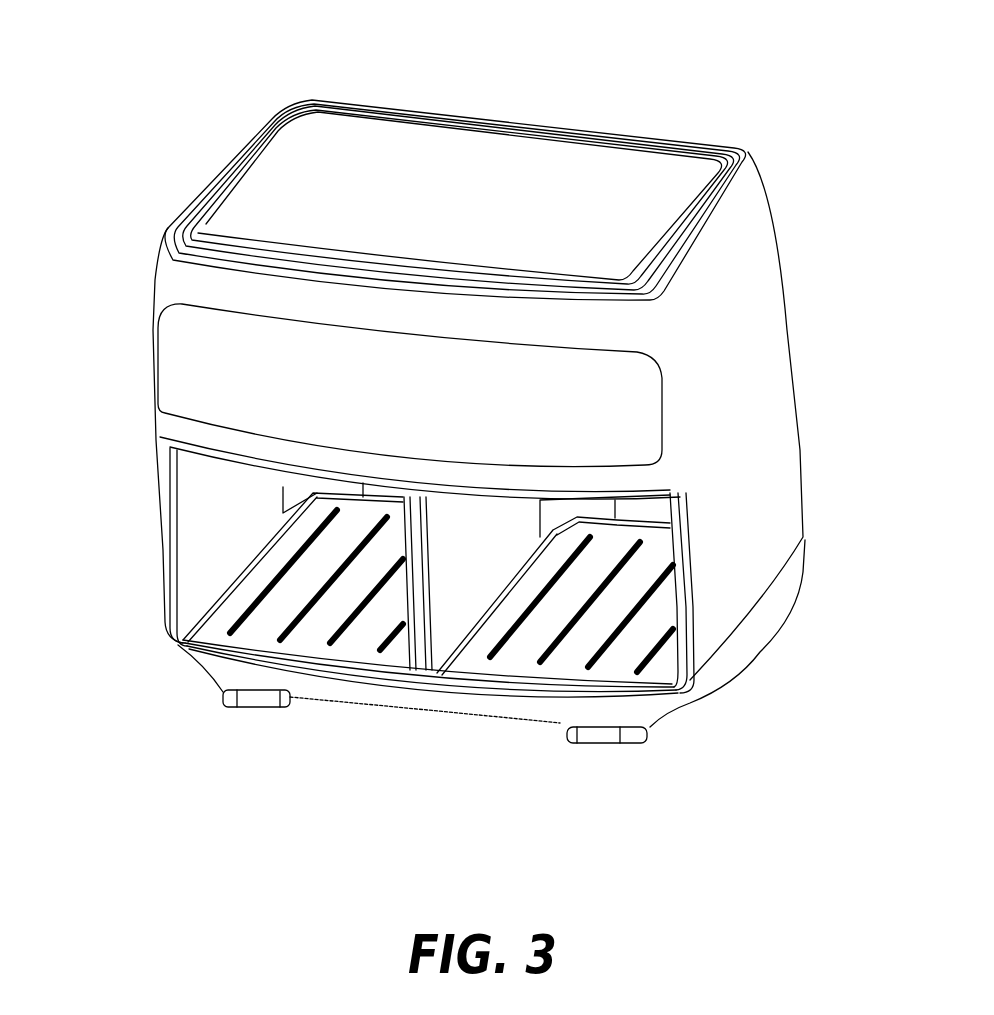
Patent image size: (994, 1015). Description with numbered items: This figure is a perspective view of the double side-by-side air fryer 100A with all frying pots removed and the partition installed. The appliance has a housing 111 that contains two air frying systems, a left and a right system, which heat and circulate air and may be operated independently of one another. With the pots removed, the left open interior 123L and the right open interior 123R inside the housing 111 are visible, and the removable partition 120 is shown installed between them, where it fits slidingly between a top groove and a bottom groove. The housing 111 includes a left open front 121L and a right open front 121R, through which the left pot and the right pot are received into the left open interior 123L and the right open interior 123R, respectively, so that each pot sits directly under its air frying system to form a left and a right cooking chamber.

The double side-by-side air fryer 100A is at (252, 72).
The housing 111 is at (150, 300).
The left open front 121L is at (163, 542).
The right open front 121R is at (673, 613).
The removable partition 120 is at (410, 640).
The left open interior 123L is at (277, 620).
The right open interior 123R is at (567, 650).